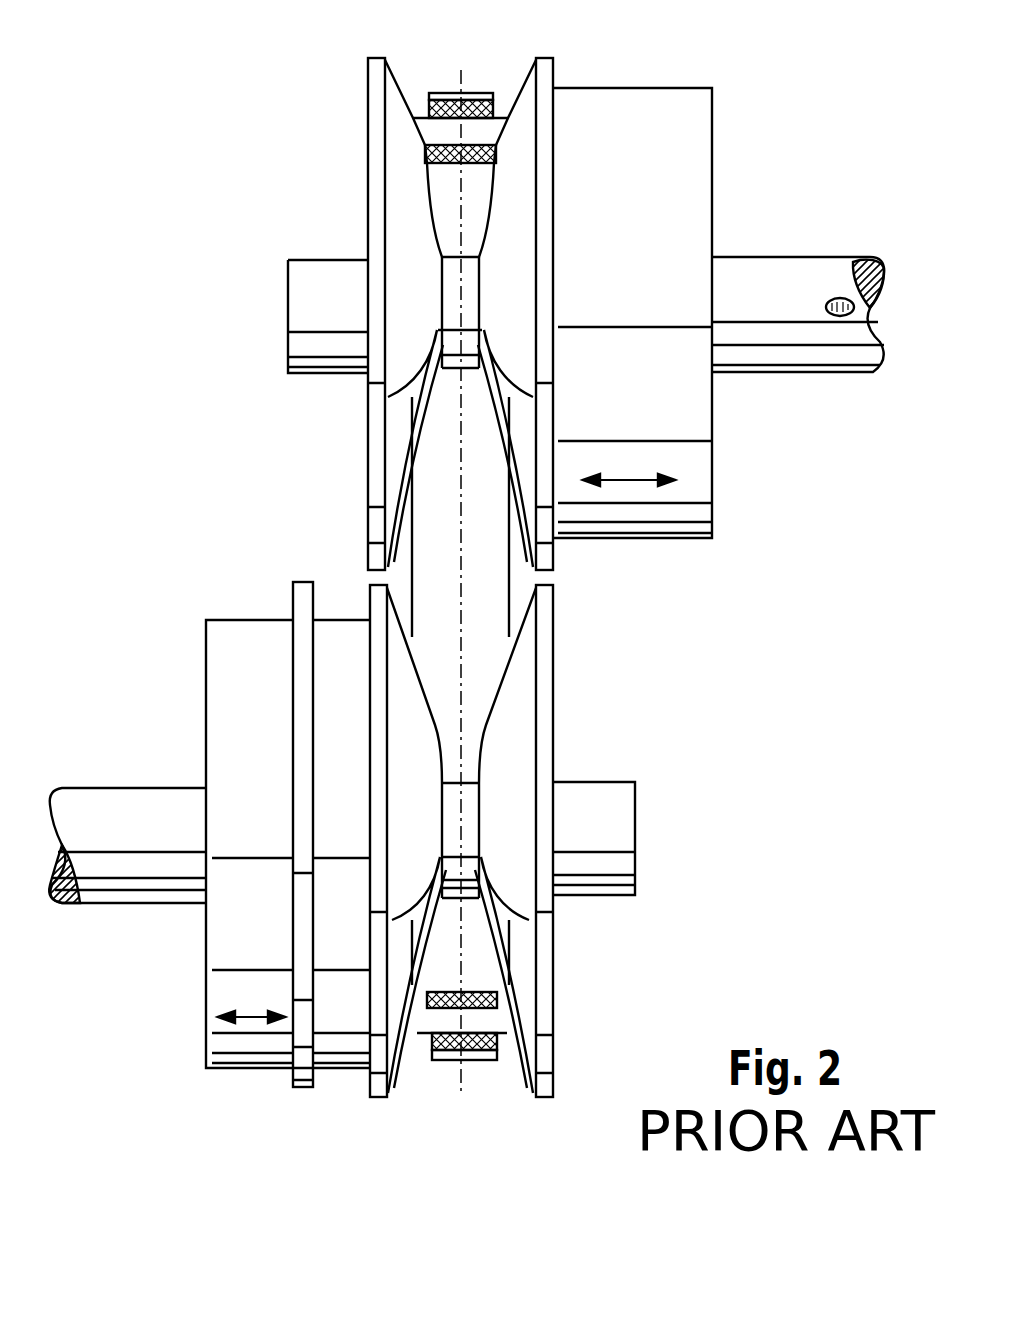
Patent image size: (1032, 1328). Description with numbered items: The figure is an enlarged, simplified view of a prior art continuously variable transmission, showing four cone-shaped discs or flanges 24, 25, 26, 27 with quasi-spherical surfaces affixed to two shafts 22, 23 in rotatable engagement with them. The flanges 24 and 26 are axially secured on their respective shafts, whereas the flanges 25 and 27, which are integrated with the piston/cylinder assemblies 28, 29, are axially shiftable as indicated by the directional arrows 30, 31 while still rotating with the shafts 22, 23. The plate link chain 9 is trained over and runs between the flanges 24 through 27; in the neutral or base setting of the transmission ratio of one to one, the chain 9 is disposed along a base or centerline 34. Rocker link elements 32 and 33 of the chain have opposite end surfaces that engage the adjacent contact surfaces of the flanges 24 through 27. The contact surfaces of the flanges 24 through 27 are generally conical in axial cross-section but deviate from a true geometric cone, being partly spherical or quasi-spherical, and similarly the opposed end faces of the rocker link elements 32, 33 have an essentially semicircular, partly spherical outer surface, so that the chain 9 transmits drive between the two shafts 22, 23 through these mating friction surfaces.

The plate link chain 9 is at (435, 100).
The shaft 22 is at (780, 283).
The shaft 23 is at (113, 805).
The flange 24 is at (398, 188).
The flange 25 is at (523, 107).
The flange 26 is at (532, 1067).
The flange 27 is at (402, 1070).
The piston/cylinder assembly 28 is at (632, 313).
The piston/cylinder assembly 29 is at (288, 834).
The directional arrow 30 is at (627, 483).
The directional arrow 31 is at (253, 1020).
The rocker link element 32 is at (439, 92).
The rocker link element 33 is at (437, 1022).
The centerline 34 is at (463, 610).